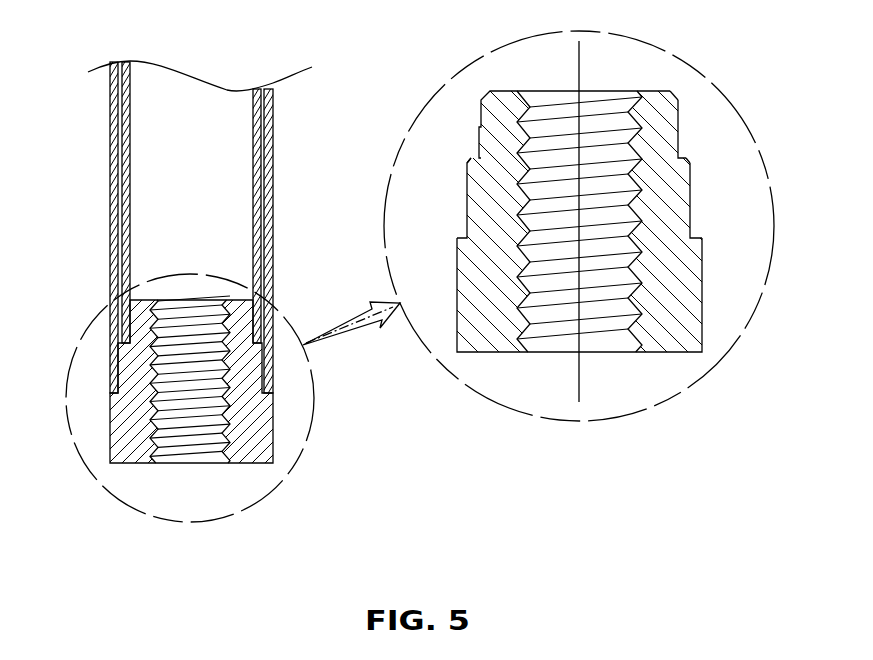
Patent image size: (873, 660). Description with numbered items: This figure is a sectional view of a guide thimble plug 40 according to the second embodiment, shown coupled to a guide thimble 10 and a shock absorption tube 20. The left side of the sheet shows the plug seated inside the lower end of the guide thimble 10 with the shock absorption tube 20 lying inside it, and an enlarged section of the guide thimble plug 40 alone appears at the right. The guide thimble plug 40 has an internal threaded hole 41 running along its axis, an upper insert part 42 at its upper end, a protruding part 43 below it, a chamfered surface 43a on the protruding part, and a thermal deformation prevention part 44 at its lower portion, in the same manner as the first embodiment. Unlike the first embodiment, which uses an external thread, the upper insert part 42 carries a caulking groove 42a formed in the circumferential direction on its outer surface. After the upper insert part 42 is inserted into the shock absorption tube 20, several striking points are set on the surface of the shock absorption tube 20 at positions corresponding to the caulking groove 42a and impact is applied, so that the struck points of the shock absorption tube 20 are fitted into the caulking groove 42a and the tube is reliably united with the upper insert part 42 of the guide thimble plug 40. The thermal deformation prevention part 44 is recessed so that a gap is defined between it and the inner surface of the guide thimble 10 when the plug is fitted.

The guide thimble 10 is at (272, 140).
The shock absorption tube 20 is at (259, 195).
The guide thimble plug 40 is at (107, 423).
The internal threaded hole 41 is at (633, 350).
The upper insert part 42 is at (677, 134).
The caulking groove 42a is at (673, 94).
The protruding part 43 is at (692, 177).
The chamfered surface 43a is at (692, 166).
The thermal deformation prevention part 44 is at (692, 220).